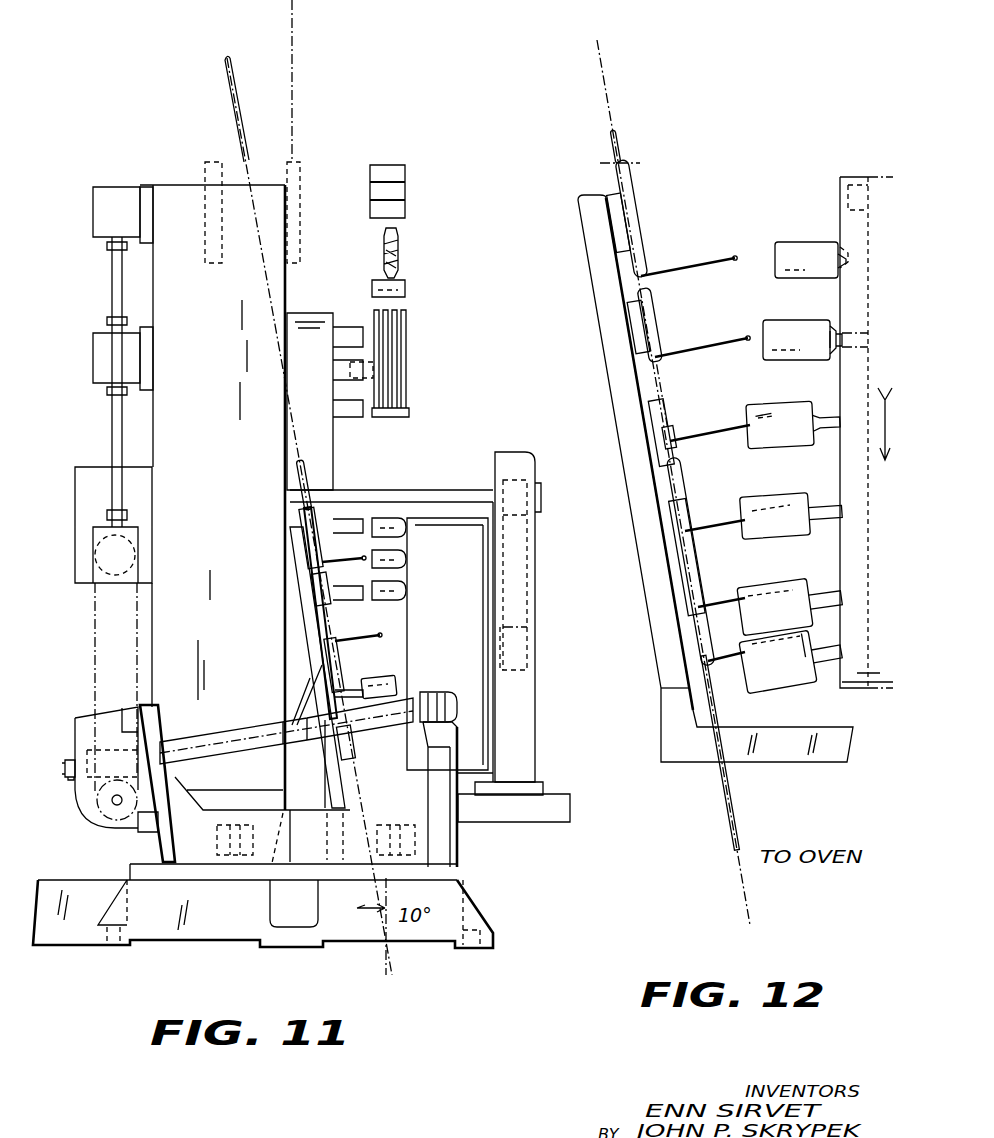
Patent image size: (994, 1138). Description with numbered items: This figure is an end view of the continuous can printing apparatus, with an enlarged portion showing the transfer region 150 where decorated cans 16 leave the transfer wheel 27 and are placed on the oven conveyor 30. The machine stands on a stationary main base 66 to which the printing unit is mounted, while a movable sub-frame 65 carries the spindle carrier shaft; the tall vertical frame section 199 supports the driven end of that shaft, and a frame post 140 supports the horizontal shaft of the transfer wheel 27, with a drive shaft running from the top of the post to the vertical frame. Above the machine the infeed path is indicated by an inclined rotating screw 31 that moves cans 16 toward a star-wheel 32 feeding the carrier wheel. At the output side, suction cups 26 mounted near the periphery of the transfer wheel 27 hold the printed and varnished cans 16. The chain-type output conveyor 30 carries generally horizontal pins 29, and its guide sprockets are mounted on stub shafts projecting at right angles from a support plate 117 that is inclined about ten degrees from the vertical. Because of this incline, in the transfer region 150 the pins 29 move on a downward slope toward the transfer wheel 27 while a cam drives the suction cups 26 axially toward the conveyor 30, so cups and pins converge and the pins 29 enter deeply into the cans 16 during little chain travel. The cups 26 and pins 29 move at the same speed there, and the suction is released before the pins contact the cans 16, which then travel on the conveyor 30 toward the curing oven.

In FIG. 11, the can 16 is at (405, 212).
In FIG. 12, the can 16 is at (812, 242).
In FIG. 12, the suction cup 26 is at (833, 362).
In FIG. 11, the transfer wheel 27 is at (462, 631).
In FIG. 12, the transfer wheel 27 is at (879, 180).
In FIG. 11, the pin 29 is at (347, 640).
In FIG. 12, the pin 29 is at (712, 255).
In FIG. 11, the output conveyor 30 is at (303, 462).
In FIG. 12, the output conveyor 30 is at (672, 411).
In FIG. 11, the rotating screw 31 is at (398, 262).
In FIG. 11, the star-wheel 32 is at (408, 344).
In FIG. 11, the sub-frame 65 is at (458, 847).
In FIG. 11, the main base 66 is at (485, 914).
In FIG. 11, the support plate 117 is at (305, 600).
In FIG. 12, the support plate 117 is at (616, 423).
In FIG. 11, the frame post 140 is at (535, 583).
In FIG. 11, the transfer region 150 is at (390, 627).
In FIG. 12, the transfer region 150 is at (800, 316).
In FIG. 11, the vertical frame section 199 is at (240, 494).